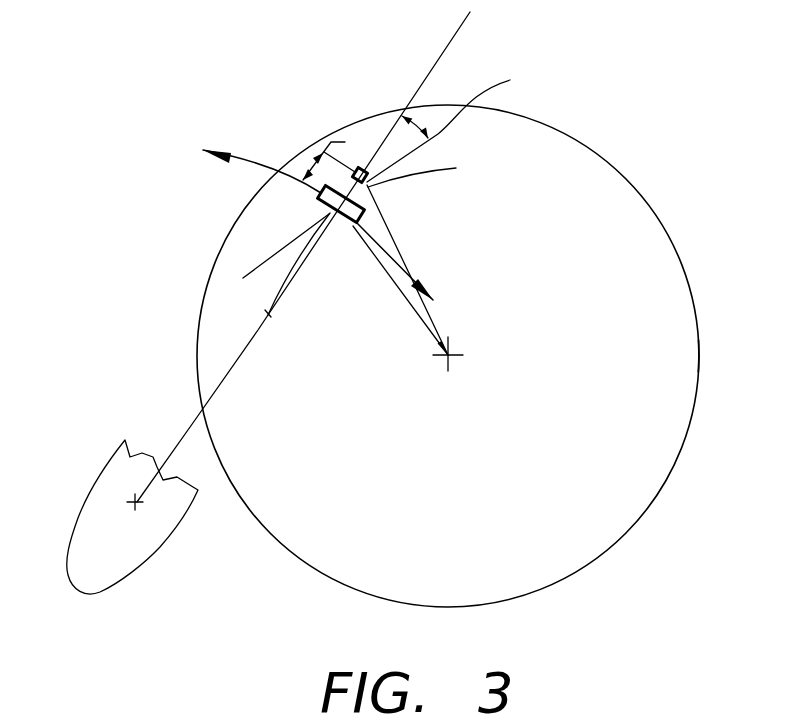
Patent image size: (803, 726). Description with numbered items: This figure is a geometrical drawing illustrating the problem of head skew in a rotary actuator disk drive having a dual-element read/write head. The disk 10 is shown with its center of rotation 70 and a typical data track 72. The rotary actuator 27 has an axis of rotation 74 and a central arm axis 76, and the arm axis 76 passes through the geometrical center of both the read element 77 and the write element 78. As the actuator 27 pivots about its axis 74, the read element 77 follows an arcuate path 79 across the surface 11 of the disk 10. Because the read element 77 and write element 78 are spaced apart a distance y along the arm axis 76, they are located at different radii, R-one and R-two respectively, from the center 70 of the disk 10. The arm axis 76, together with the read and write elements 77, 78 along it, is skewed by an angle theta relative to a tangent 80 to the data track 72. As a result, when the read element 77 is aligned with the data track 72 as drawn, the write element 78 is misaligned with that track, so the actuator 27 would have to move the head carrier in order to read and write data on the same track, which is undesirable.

The disk 10 is at (700, 332).
The surface 11 is at (680, 383).
The rotary actuator 27 is at (100, 520).
The center of rotation 70 is at (470, 367).
The data track 72 is at (447, 168).
The axis of rotation 74 is at (148, 508).
The central arm axis 76 is at (450, 42).
The read element 77 is at (321, 199).
The write element 78 is at (368, 168).
The arcuate path 79 is at (243, 166).
The tangent 80 is at (457, 125).